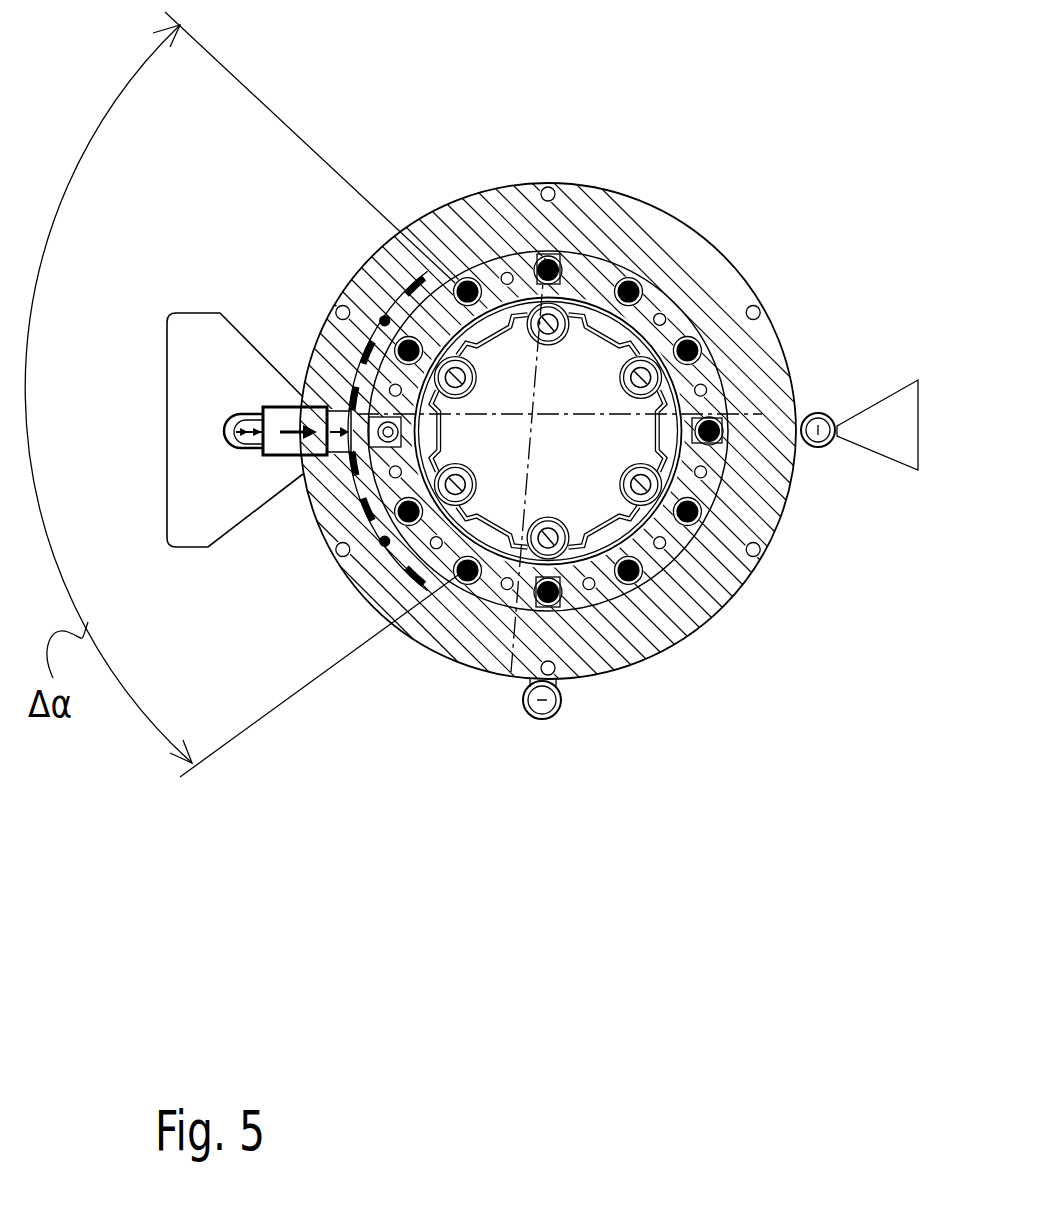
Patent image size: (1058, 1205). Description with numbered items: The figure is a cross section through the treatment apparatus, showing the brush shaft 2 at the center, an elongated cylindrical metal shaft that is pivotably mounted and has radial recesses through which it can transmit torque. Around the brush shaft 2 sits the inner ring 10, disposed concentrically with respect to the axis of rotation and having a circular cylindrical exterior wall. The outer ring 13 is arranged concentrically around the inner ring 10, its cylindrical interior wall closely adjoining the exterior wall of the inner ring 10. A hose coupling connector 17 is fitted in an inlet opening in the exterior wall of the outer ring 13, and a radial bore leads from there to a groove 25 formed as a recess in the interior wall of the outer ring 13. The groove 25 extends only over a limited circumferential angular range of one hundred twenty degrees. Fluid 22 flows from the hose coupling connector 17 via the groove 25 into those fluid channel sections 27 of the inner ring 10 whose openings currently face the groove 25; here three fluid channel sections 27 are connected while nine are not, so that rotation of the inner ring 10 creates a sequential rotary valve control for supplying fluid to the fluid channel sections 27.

The brush shaft 2 is at (446, 418).
The inner ring 10 is at (581, 278).
The outer ring 13 is at (462, 236).
The hose coupling connector 17 is at (258, 398).
The fluid 22 is at (262, 432).
The groove 25 is at (383, 318).
The fluid channel sections 27 is at (407, 518).